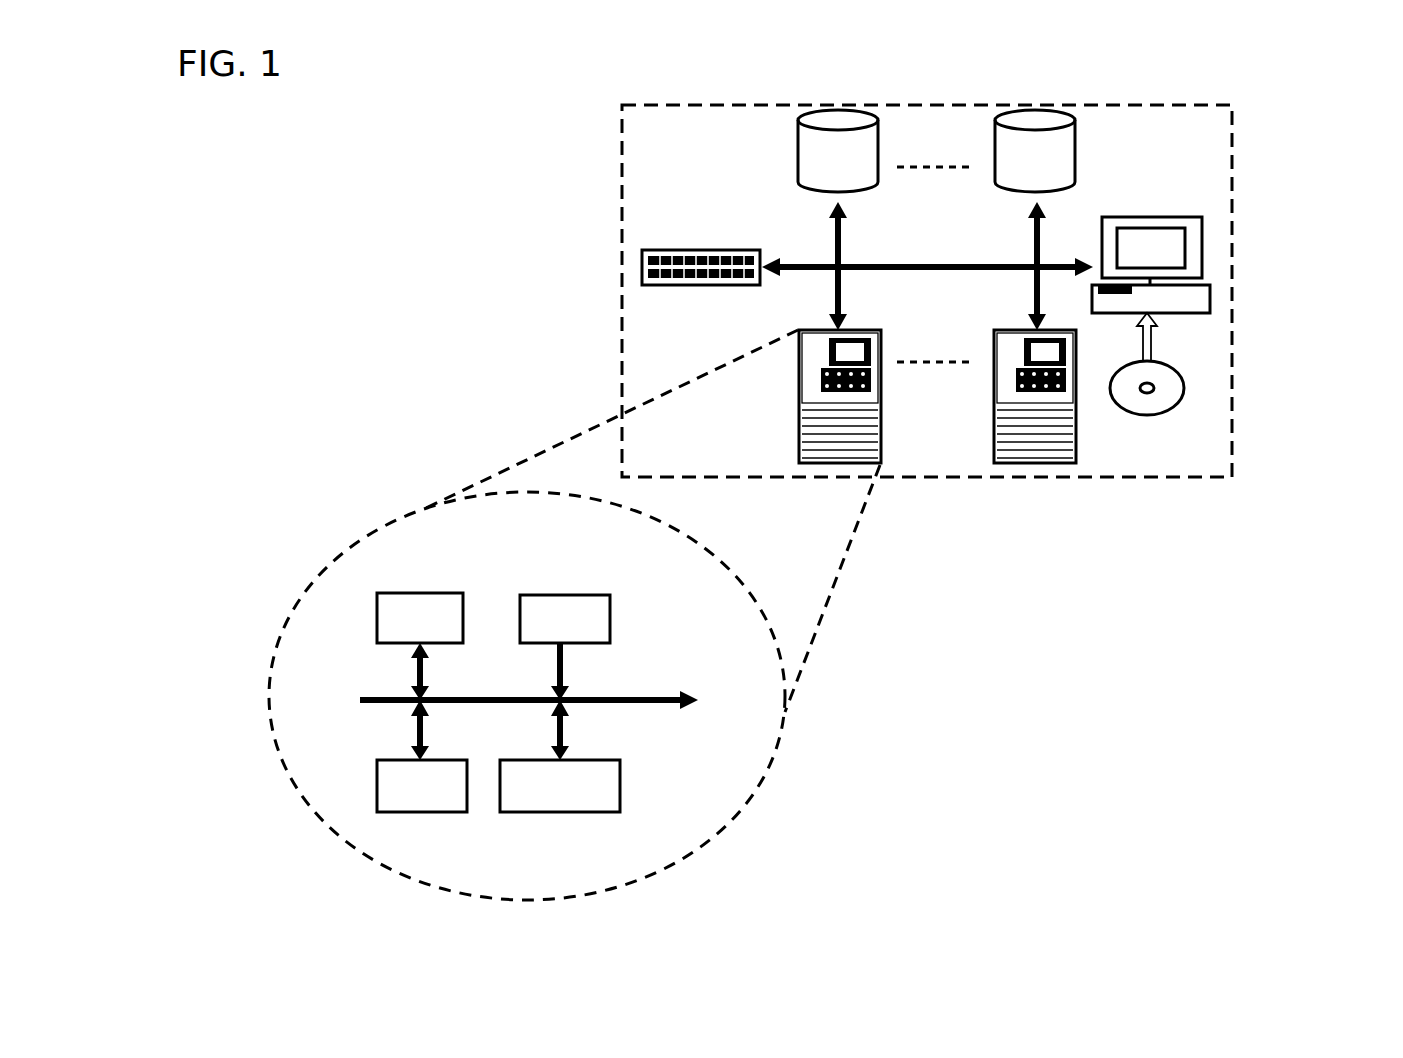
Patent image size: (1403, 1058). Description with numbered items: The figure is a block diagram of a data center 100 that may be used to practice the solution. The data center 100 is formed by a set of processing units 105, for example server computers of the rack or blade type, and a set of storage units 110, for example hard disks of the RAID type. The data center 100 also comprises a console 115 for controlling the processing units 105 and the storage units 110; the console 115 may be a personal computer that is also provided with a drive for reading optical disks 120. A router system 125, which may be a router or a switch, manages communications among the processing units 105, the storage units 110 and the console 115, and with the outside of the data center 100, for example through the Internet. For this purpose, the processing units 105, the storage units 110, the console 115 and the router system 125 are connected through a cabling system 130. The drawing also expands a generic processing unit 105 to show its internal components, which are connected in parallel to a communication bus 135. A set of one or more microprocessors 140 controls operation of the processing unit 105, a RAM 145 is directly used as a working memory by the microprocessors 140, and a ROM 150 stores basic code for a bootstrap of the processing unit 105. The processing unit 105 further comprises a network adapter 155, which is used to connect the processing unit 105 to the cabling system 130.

The data center 100 is at (393, 250).
The processing units 105 is at (798, 388).
The storage units 110 is at (798, 155).
The console 115 is at (1122, 217).
The optical disks 120 is at (1130, 412).
The router system 125 is at (740, 248).
The cabling system 130 is at (975, 262).
The communication bus 135 is at (645, 705).
The microprocessors 140 is at (437, 593).
The RAM 145 is at (405, 812).
The ROM 150 is at (577, 595).
The network adapter 155 is at (562, 812).